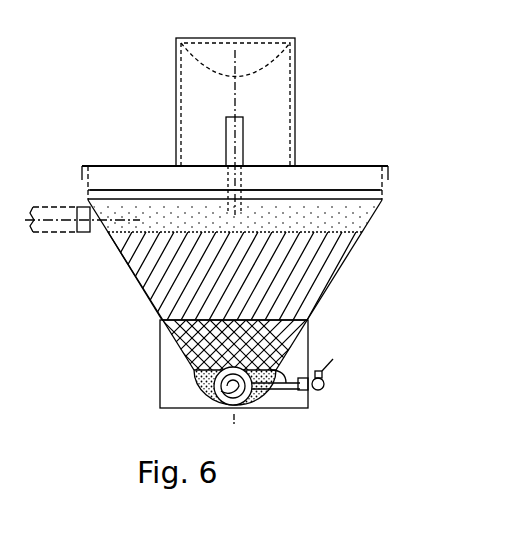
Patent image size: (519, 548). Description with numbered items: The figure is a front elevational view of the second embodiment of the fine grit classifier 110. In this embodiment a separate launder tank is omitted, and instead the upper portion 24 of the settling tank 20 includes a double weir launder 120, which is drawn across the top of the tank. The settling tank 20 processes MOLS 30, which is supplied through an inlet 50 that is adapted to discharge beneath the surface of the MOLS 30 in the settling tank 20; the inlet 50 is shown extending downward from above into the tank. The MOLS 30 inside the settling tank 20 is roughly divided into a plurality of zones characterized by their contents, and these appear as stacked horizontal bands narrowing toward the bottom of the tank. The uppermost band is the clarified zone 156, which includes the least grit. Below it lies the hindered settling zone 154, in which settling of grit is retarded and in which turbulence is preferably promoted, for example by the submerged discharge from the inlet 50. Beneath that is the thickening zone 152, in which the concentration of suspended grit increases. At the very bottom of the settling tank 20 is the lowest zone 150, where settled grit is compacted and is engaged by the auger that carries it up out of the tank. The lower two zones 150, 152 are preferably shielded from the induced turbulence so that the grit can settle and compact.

The fine grit classifier 110 is at (138, 63).
The double weir launder 120 is at (145, 183).
The inlet 50 is at (236, 140).
The upper portion 24 is at (366, 182).
The clarified zone 156 is at (343, 218).
The hindered settling zone 154 is at (292, 273).
The thickening zone 152 is at (272, 337).
The lowest zone 150 is at (202, 388).
The MOLS 30 is at (150, 252).
The settling tank 20 is at (140, 291).